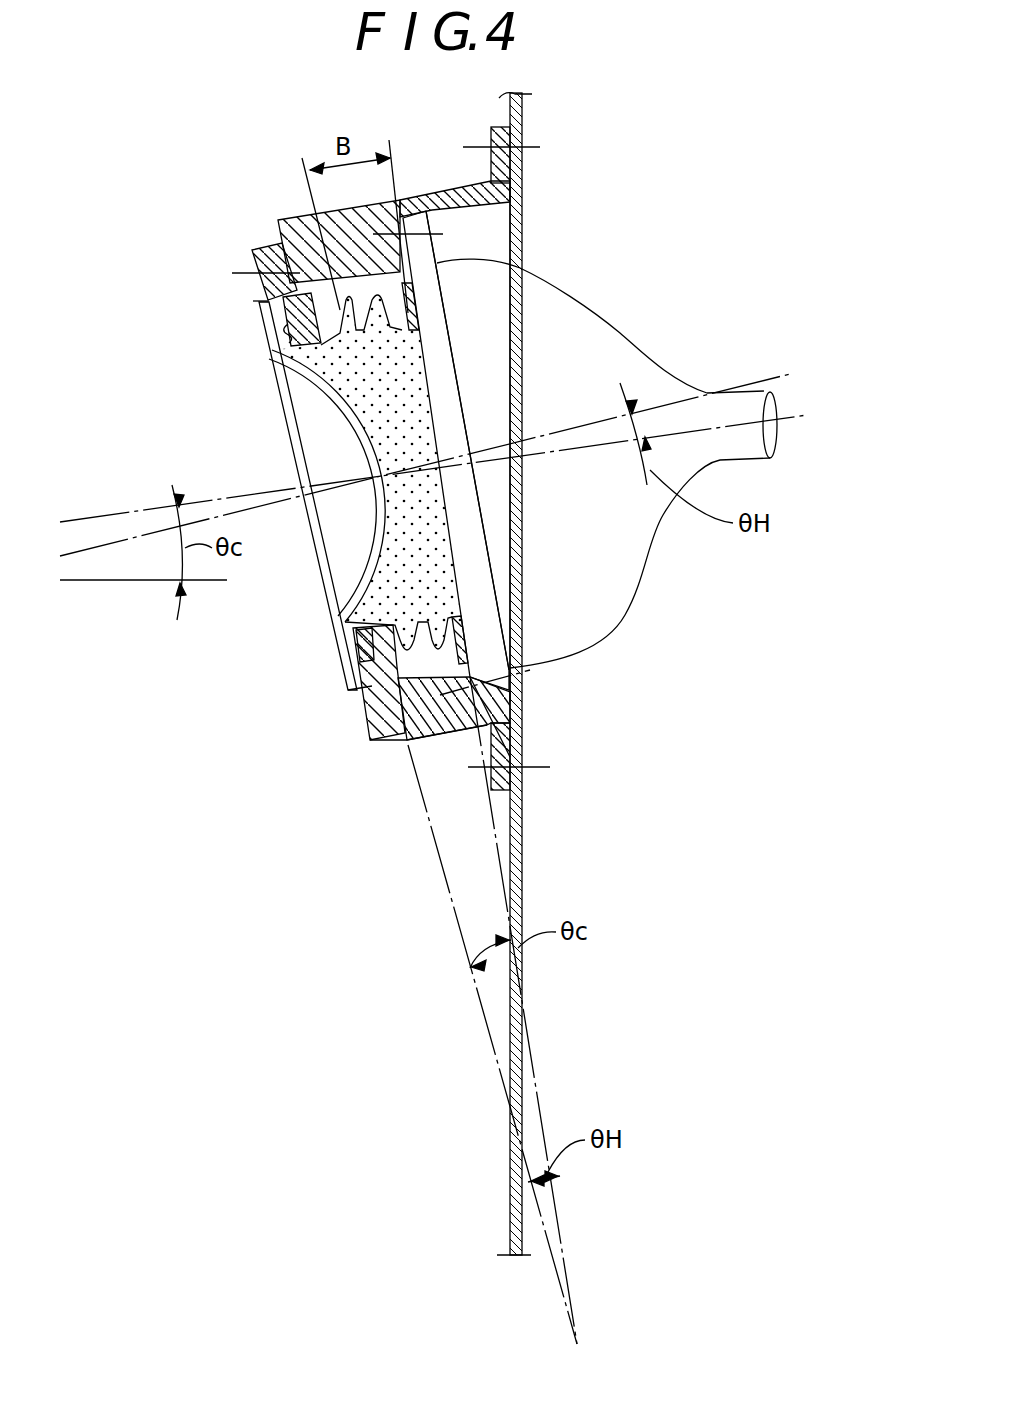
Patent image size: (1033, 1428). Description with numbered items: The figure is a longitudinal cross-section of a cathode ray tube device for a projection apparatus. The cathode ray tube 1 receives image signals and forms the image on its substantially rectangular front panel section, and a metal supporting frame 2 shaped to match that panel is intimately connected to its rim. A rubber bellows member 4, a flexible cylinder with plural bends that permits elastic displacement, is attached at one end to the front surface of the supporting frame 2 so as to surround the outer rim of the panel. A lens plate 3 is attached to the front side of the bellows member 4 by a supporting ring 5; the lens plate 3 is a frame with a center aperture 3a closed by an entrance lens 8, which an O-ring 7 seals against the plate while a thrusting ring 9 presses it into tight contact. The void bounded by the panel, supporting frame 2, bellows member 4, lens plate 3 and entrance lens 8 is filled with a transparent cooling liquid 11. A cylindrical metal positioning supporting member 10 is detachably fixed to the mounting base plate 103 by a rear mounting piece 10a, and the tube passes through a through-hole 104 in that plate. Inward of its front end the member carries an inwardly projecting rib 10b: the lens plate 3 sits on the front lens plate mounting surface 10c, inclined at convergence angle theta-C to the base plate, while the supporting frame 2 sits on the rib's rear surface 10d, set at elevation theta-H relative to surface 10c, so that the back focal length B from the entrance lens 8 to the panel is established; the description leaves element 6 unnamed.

The cathode ray tube 1 is at (630, 597).
The supporting frame 2 is at (490, 638).
The lens plate 3 is at (372, 745).
The center aperture 3a is at (335, 602).
The bellows member 4 is at (296, 372).
The supporting ring 5 is at (281, 307).
The beam emitting surface 6 is at (412, 300).
The O-ring 7 is at (286, 342).
The entrance lens 8 is at (355, 634).
The thrusting ring 9 is at (348, 675).
The positioning supporting member 10 is at (351, 511).
The rear mounting piece 10a is at (500, 143).
The inwardly projecting rib 10b is at (365, 715).
The lens plate mounting surface 10c is at (279, 233).
The supporting frame mounting surface 10d is at (445, 748).
The cooling liquid 11 is at (445, 545).
The mounting base plate 103 is at (509, 1198).
The through-hole 104 is at (520, 717).